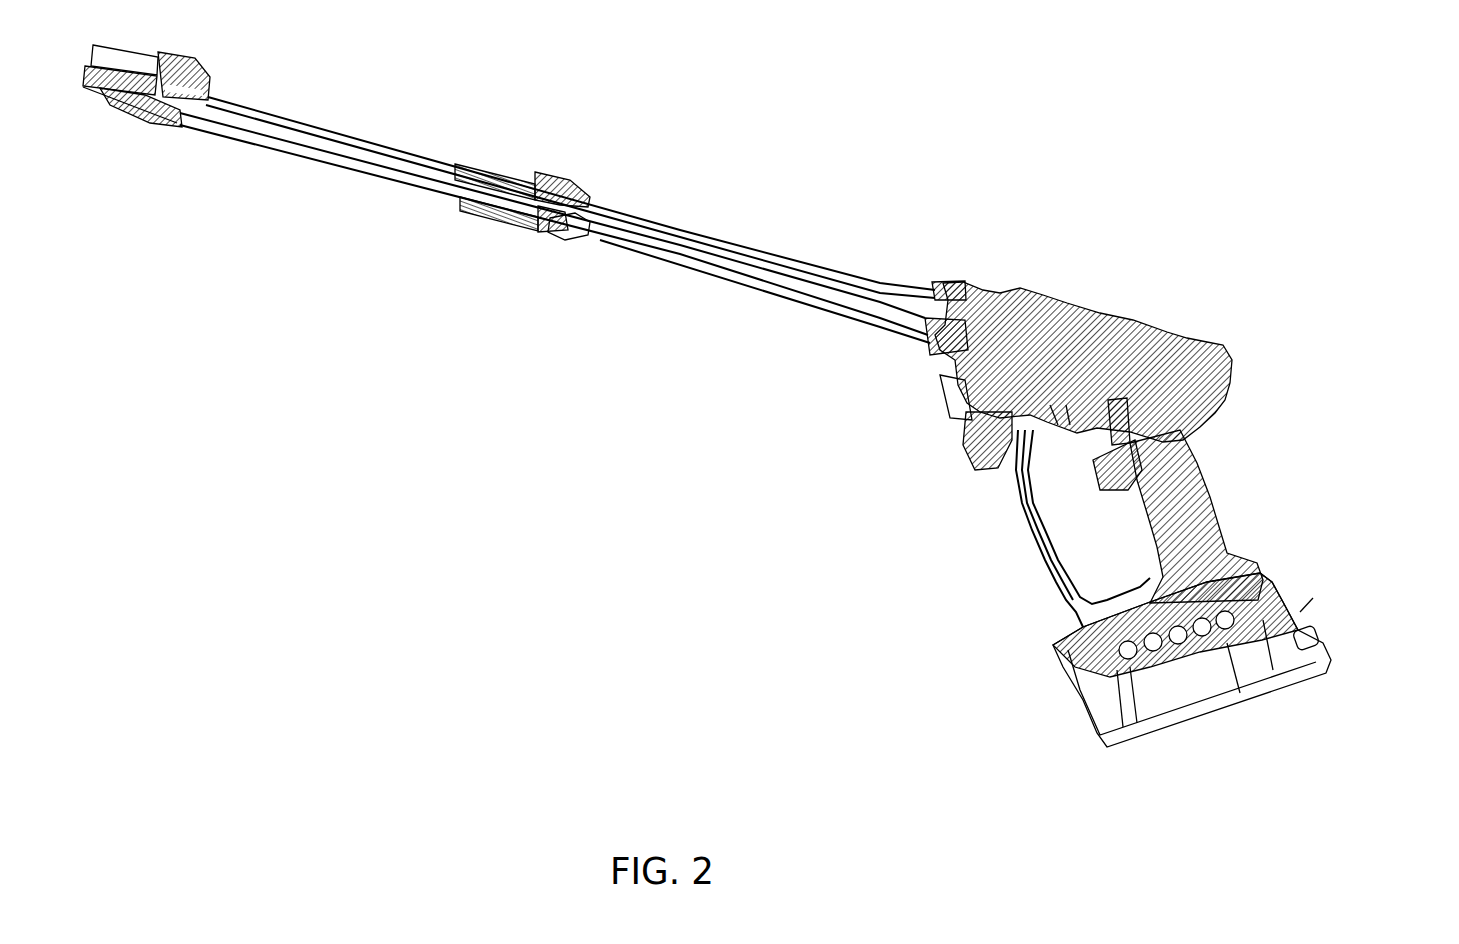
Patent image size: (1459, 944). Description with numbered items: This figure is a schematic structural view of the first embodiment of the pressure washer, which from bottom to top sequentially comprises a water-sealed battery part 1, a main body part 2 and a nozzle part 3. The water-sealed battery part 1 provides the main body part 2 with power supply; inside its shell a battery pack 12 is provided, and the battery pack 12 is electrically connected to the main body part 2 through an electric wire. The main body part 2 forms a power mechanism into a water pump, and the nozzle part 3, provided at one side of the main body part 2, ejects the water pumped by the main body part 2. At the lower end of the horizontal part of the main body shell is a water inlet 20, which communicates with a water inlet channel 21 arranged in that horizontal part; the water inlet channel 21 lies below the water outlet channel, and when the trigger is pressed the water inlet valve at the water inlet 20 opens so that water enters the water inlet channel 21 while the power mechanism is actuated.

The water-sealed battery part 1 is at (1254, 637).
The main body part 2 is at (1142, 323).
The nozzle part 3 is at (583, 171).
The battery pack 12 is at (1177, 665).
The water inlet 20 is at (975, 462).
The water inlet channel 21 is at (960, 396).